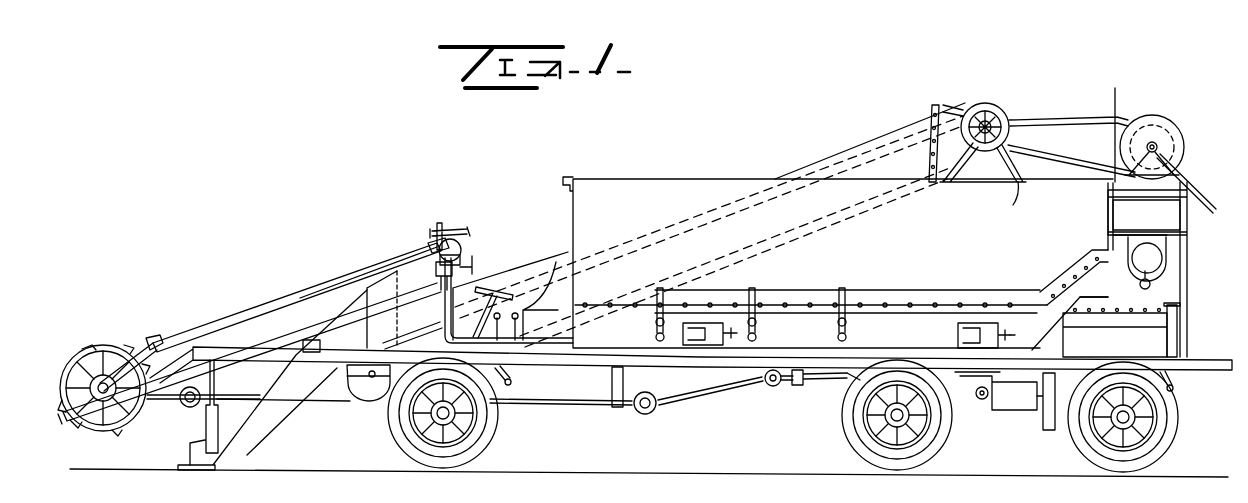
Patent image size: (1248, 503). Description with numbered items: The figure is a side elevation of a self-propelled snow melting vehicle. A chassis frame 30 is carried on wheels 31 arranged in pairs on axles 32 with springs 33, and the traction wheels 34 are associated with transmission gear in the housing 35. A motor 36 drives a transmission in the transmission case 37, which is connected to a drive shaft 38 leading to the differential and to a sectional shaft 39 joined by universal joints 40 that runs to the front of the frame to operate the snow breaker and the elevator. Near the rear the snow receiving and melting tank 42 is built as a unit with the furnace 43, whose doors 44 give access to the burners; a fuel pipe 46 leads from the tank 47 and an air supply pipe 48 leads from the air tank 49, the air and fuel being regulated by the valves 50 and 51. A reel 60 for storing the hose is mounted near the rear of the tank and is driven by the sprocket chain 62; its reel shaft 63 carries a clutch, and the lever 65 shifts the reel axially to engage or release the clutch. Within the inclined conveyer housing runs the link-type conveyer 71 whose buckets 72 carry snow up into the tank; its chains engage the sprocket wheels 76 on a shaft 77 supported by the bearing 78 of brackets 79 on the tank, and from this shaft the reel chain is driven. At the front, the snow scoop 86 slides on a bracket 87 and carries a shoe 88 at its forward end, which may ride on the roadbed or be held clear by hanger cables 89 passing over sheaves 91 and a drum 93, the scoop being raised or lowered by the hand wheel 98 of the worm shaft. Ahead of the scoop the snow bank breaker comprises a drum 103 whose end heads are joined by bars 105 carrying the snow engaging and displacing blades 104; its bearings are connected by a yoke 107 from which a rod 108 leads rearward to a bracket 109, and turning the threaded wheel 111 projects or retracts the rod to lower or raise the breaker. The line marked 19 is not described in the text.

The section line 19 is at (1108, 104).
The chassis frame 30 is at (1226, 372).
The wheels 31 is at (498, 446).
The axles 32 is at (455, 414).
The springs 33 is at (510, 376).
The traction wheels 34 is at (948, 450).
The housing 35 is at (856, 428).
The motor 36 is at (1158, 327).
The transmission case 37 is at (1030, 412).
The drive shaft 38 is at (977, 412).
The sectional shaft 39 is at (1013, 342).
The universal joints 40 is at (1000, 384).
The snow receiving and melting tank 42 is at (784, 225).
The furnace 43 is at (760, 380).
The doors 44 is at (703, 350).
The fuel pipe 46 is at (1072, 272).
The tank 47 is at (1168, 223).
The air supply pipe 48 is at (1120, 292).
The air tank 49 is at (1153, 263).
The valve 50 is at (1151, 285).
The valve 51 is at (1122, 243).
The reel 60 is at (1168, 130).
The sprocket chain 62 is at (1060, 158).
The reel shaft 63 is at (1152, 140).
The lever 65 is at (1198, 190).
The conveyer 71 is at (372, 398).
The buckets 72 is at (942, 113).
The sprocket wheels 76 is at (993, 108).
The shaft 77 is at (1006, 121).
The bearing 78 is at (1021, 120).
The brackets 79 is at (1013, 207).
The snow scoop 86 is at (436, 270).
The bracket 87 is at (350, 343).
The shoe 88 is at (250, 421).
The hanger cables 89 is at (308, 292).
The sheaves 91 is at (240, 340).
The drum 93 is at (430, 249).
The hand wheel 98 is at (478, 265).
The drum 103 is at (130, 345).
The snow engaging and displacing blades 104 is at (100, 440).
The bars 105 is at (110, 344).
The yoke 107 is at (160, 336).
The rod 108 is at (222, 324).
The bracket 109 is at (465, 245).
The wheel 111 is at (445, 225).